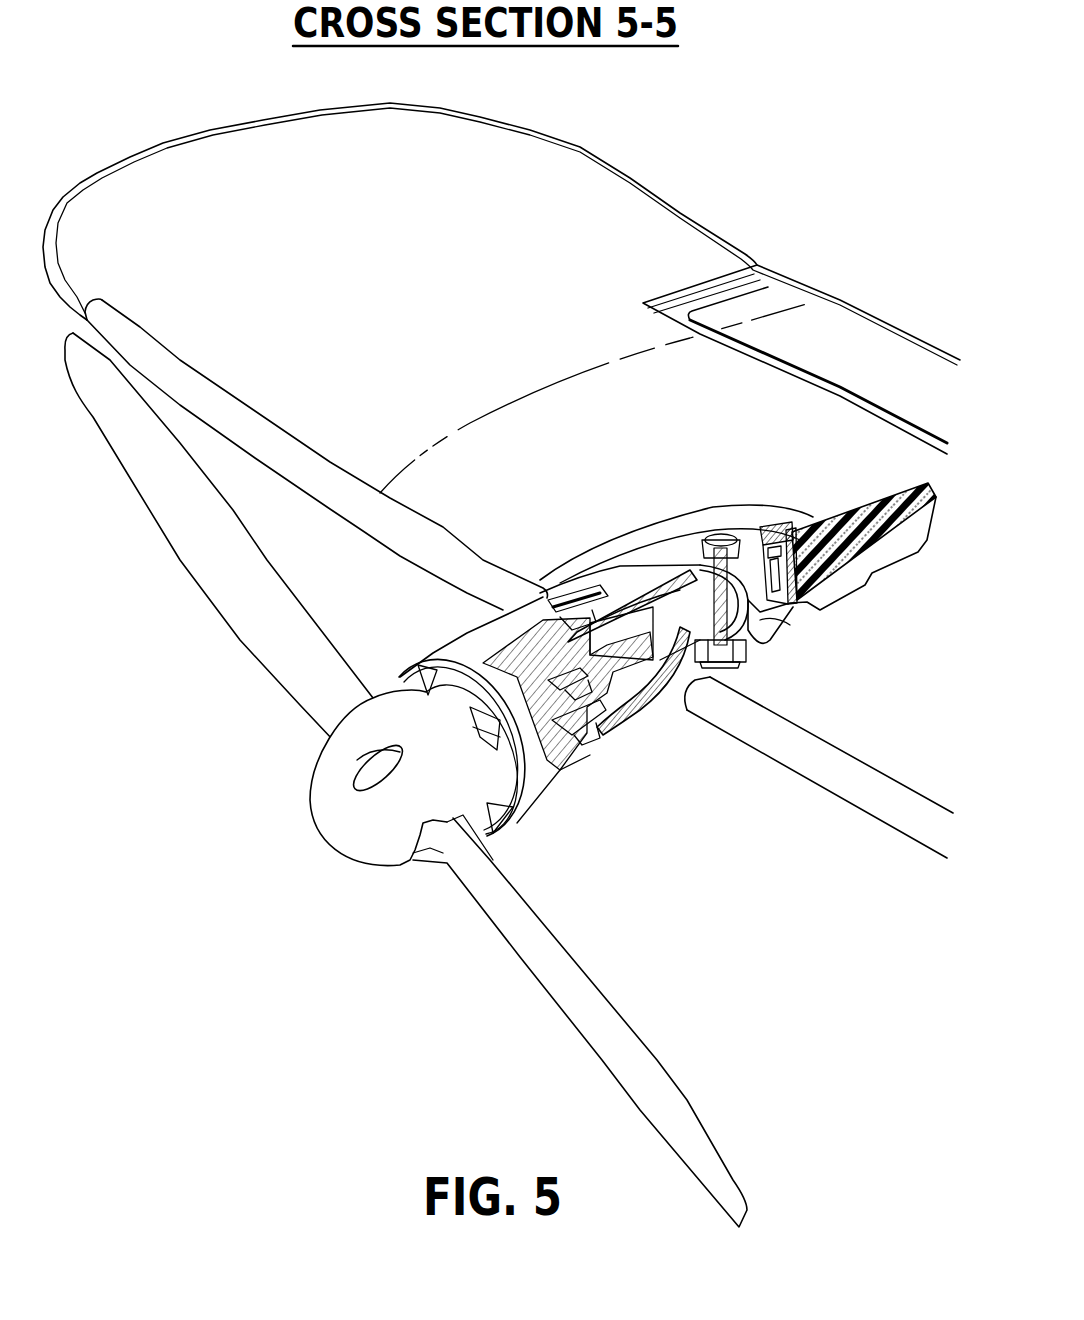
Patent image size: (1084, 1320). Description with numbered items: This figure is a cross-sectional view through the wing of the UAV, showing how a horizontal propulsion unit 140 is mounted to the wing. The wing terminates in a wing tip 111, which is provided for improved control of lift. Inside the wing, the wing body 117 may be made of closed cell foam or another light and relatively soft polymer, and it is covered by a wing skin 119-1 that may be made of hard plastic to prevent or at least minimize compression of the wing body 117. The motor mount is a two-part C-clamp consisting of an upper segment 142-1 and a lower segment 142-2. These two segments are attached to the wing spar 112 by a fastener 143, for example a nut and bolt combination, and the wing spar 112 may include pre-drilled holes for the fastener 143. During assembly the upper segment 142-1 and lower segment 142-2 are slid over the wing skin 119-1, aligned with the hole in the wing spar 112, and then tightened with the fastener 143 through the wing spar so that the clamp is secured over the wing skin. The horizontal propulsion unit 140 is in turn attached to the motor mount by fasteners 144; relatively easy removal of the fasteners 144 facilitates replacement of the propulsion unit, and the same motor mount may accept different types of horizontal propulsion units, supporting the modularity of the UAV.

The wing tip 111 is at (182, 142).
The wing spar 112 is at (747, 630).
The wing body 117 is at (897, 490).
The wing skin 119-1 is at (846, 505).
The horizontal propulsion unit 140 is at (527, 822).
The upper segment 142-1 is at (693, 570).
The lower segment 142-2 is at (660, 690).
The fastener 143 is at (660, 560).
The fasteners 144 is at (543, 593).